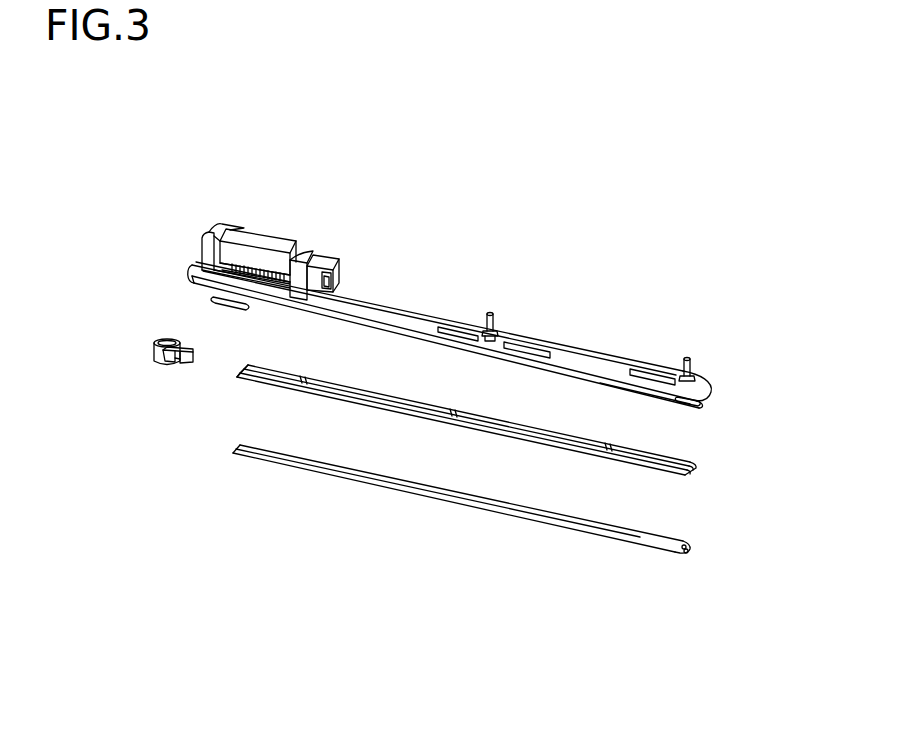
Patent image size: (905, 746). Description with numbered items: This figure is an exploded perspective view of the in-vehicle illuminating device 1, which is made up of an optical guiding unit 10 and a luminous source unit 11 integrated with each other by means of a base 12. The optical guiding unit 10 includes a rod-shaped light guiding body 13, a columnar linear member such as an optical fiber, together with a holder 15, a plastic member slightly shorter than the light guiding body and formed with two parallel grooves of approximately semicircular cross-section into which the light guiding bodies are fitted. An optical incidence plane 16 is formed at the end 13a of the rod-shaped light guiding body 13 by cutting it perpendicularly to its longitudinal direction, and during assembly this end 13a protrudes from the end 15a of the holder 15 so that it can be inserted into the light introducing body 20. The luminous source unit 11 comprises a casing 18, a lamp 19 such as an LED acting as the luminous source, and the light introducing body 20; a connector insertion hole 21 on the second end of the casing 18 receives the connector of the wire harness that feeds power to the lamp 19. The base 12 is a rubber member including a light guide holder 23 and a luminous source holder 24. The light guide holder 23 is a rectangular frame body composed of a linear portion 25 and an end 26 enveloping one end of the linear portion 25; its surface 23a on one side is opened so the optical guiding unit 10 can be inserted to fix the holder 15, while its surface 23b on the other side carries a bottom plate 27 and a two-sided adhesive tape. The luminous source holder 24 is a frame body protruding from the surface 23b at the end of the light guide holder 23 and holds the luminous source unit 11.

The in-vehicle illuminating device 1 is at (714, 328).
The optical guiding unit 10 is at (791, 440).
The luminous source unit 11 is at (300, 239).
The base 12 is at (510, 326).
The rod-shaped light guiding body 13 is at (661, 539).
The end of the rod-shaped light guiding body 13a is at (418, 502).
The holder 15 is at (690, 466).
The end of the holder 15a is at (238, 367).
The optical incidence plane 16 is at (232, 449).
The casing 18 is at (258, 236).
The lamp 19 is at (265, 215).
The light introducing body 20 is at (153, 353).
The connector insertion hole 21 is at (338, 277).
The light guide holder 23 is at (614, 357).
The surface on one side of the light guide holder 23a is at (657, 395).
The surface on the other side of the light guide holder 23b is at (436, 319).
The luminous source holder 24 is at (207, 249).
The linear portion 25 is at (486, 346).
The end 26 is at (714, 387).
The bottom plate 27 is at (500, 339).